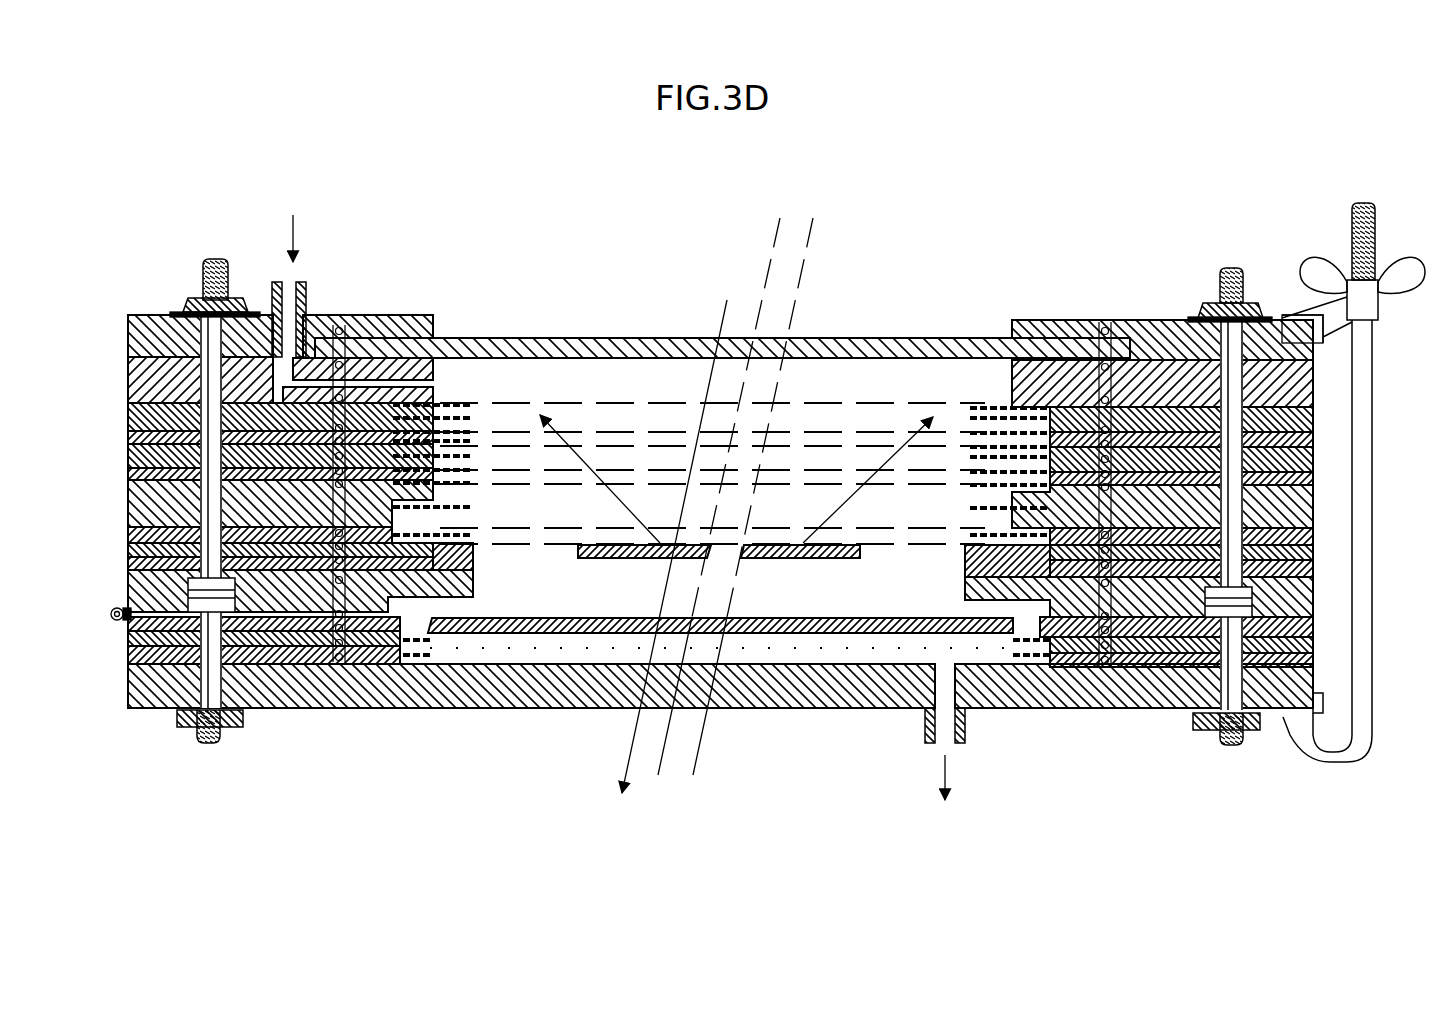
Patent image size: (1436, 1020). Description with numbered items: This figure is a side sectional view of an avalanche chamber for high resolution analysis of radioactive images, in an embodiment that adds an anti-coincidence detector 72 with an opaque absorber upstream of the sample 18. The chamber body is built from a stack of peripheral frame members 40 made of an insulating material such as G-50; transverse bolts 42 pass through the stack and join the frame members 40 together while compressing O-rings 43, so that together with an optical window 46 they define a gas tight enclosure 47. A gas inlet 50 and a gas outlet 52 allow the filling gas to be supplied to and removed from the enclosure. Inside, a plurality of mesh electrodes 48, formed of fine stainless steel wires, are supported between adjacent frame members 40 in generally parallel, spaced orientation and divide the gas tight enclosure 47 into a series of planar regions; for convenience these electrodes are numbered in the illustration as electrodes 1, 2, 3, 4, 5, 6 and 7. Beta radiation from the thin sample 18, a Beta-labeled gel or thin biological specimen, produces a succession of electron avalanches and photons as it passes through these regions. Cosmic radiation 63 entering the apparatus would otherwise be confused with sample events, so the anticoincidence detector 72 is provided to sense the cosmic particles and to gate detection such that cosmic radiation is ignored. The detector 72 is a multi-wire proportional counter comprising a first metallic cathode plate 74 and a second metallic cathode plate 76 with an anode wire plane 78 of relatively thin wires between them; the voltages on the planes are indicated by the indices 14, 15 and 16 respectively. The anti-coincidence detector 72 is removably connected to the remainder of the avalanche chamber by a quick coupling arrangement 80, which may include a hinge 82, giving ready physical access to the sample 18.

The mesh electrode 1 is at (129, 542).
The mesh electrode 2 is at (129, 528).
The mesh electrode 3 is at (131, 484).
The mesh electrode 4 is at (129, 468).
The mesh electrode 5 is at (129, 443).
The mesh electrode 6 is at (129, 431).
The mesh electrode 7 is at (131, 403).
The voltage index of first cathode plate 14 is at (129, 628).
The voltage index of anode wire plane 15 is at (129, 646).
The voltage index of second cathode plate 16 is at (129, 665).
The sample 18 is at (782, 560).
The peripheral frame member 40 is at (1182, 322).
The transverse bolt 42 is at (228, 288).
The O-ring 43 is at (1107, 690).
The optical window 46 is at (606, 340).
The gas tight enclosure 47 is at (905, 385).
The mesh electrode 48 is at (517, 527).
The gas inlet 50 is at (306, 300).
The gas outlet 52 is at (966, 727).
The cosmic radiation 63 is at (630, 765).
The anticoincidence detector 72 is at (582, 657).
The first metallic cathode plate 74 is at (502, 634).
The second metallic cathode plate 76 is at (615, 690).
The anode wire plane 78 is at (755, 648).
The quick coupling arrangement 80 is at (1300, 762).
The hinge 82 is at (111, 612).